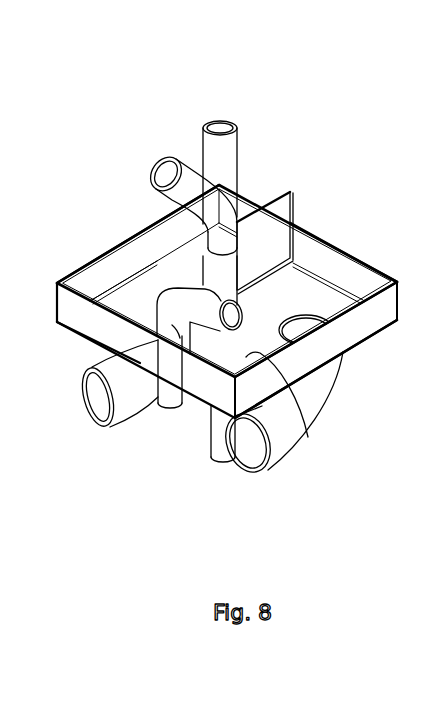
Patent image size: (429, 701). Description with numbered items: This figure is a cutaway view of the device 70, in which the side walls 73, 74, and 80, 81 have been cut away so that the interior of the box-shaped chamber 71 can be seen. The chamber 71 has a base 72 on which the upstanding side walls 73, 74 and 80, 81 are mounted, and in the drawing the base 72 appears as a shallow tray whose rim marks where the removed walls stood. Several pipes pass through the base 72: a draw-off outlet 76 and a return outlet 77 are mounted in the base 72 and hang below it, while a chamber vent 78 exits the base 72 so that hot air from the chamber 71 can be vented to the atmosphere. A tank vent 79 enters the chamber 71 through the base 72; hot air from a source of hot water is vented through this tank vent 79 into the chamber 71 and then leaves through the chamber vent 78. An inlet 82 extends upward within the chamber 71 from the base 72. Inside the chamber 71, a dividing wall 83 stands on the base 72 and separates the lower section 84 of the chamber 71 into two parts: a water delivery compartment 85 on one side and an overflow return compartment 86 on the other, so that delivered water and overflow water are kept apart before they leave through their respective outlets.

The device 70 is at (100, 92).
The box-shaped chamber 71 is at (343, 297).
The base 72 is at (78, 272).
The side wall 73 is at (78, 316).
The side wall 74 is at (357, 325).
The draw-off outlet 76 is at (122, 393).
The return outlet 77 is at (313, 398).
The chamber vent 78 is at (168, 405).
The tank vent 79 is at (163, 172).
The side wall 80 is at (123, 263).
The side wall 81 is at (243, 203).
The inlet 82 is at (228, 146).
The dividing wall 83 is at (283, 207).
The lower section 84 is at (325, 248).
The water delivery compartment 85 is at (160, 237).
The overflow return compartment 86 is at (307, 432).